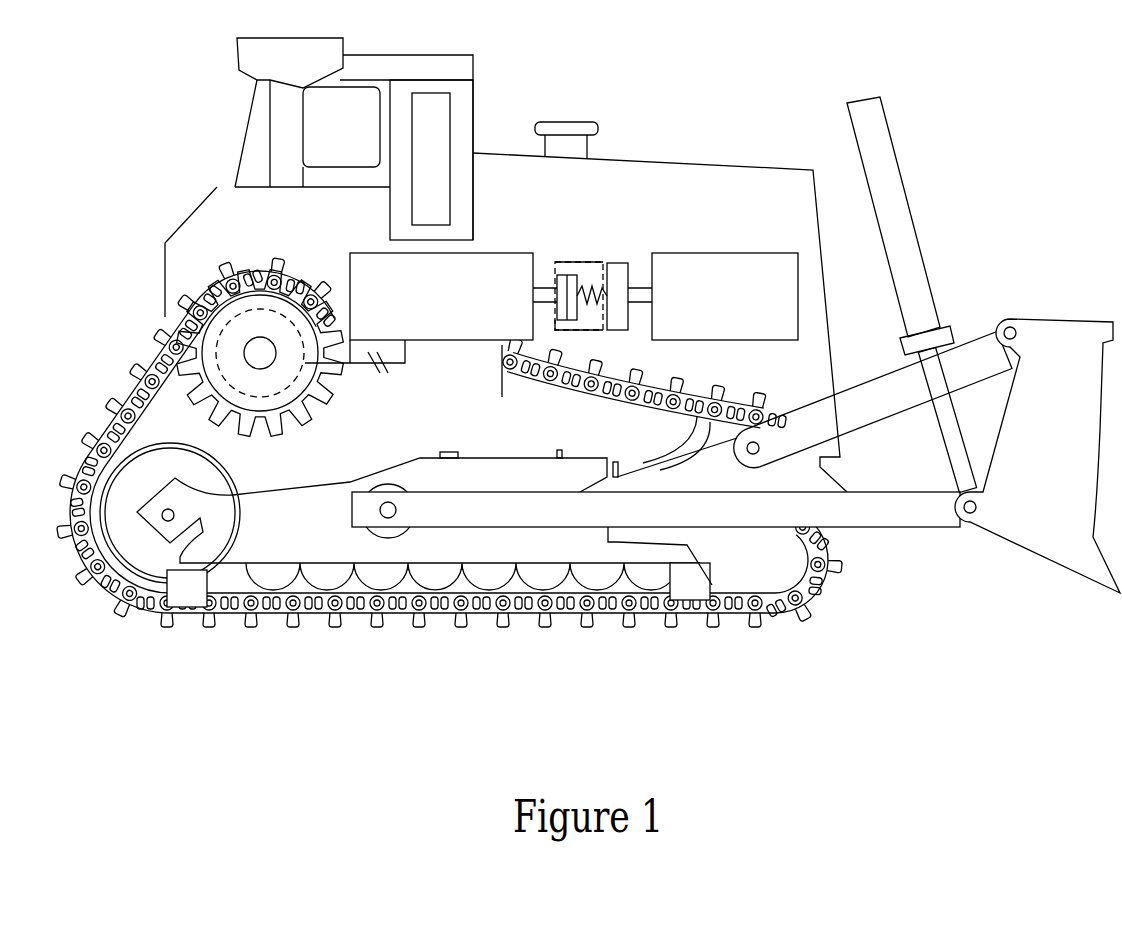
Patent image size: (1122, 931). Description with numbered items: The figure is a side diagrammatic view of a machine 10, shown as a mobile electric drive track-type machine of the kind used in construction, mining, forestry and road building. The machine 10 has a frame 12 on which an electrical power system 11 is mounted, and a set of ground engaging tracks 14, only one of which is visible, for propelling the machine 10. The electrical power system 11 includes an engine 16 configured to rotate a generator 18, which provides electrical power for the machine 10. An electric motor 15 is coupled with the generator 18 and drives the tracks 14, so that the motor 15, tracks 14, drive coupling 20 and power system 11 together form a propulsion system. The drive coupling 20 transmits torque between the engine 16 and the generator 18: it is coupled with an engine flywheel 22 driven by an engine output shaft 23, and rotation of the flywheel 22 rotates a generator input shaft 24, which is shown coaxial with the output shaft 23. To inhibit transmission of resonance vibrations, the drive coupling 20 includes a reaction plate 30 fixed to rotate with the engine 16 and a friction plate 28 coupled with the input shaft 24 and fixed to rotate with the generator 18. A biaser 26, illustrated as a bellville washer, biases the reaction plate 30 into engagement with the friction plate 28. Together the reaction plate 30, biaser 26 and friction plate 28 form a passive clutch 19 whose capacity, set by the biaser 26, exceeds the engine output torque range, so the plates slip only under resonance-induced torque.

The machine 10 is at (960, 130).
The electrical power system 11 is at (578, 309).
The frame 12 is at (203, 196).
The tracks 14 is at (82, 578).
The electric motor 15 is at (218, 368).
The engine 16 is at (752, 253).
The generator 18 is at (358, 253).
The passive clutch 19 is at (566, 260).
The drive coupling 20 is at (573, 324).
The engine flywheel 22 is at (603, 323).
The engine output shaft 23 is at (642, 304).
The generator input shaft 24 is at (543, 306).
The biaser 26 is at (598, 284).
The friction plate 28 is at (557, 276).
The reaction plate 30 is at (589, 264).